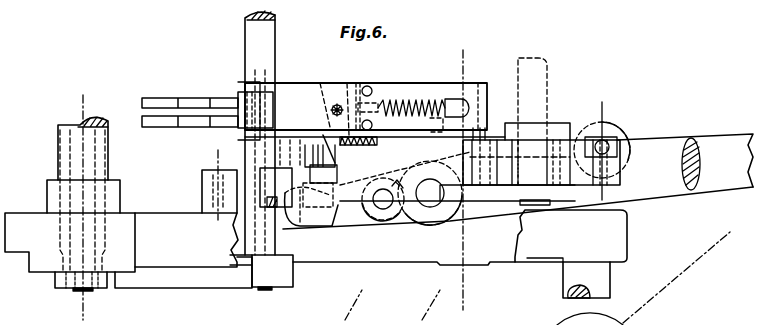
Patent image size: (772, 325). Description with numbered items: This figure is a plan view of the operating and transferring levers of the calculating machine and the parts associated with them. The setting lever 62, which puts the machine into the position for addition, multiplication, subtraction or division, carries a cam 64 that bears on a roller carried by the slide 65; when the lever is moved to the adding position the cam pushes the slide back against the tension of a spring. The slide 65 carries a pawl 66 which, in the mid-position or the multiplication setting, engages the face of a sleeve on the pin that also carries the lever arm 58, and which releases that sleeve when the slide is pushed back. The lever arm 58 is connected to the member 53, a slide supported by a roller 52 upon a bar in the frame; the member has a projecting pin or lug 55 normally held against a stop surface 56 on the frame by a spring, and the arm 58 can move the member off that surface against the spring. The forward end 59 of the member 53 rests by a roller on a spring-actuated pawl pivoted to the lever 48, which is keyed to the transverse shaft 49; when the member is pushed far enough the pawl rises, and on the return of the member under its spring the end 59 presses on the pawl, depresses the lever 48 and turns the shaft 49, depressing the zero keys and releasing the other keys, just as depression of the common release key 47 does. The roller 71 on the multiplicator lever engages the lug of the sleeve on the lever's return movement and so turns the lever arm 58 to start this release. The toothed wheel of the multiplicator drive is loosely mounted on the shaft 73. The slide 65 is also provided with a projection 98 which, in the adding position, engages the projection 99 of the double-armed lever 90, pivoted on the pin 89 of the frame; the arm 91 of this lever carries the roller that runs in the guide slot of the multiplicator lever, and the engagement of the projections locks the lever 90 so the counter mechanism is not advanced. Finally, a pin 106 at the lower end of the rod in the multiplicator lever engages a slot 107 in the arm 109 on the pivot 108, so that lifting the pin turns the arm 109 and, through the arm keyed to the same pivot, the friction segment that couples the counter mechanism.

The release key 47 is at (618, 140).
The lever 48 is at (555, 132).
The shaft 49 is at (540, 68).
The roller 52 is at (474, 106).
The member 53 is at (503, 200).
The projecting pin or lug 55 is at (433, 130).
The stop surface 56 is at (442, 98).
The lever arm 58 is at (313, 150).
The forward end 59 is at (570, 190).
The lever 62 is at (195, 117).
The cam 64 is at (153, 107).
The slide 65 is at (292, 92).
The pawl 66 is at (330, 100).
The roller 71 is at (207, 184).
The shaft 73 is at (62, 148).
The pin 89 is at (432, 194).
The double armed lever 90 is at (666, 152).
The arm 91 is at (337, 226).
The projection 98 is at (375, 92).
The projection 99 is at (385, 202).
The pin 106 is at (93, 283).
The slot 107 is at (66, 283).
The pivot 108 is at (263, 285).
The arm 109 is at (176, 278).